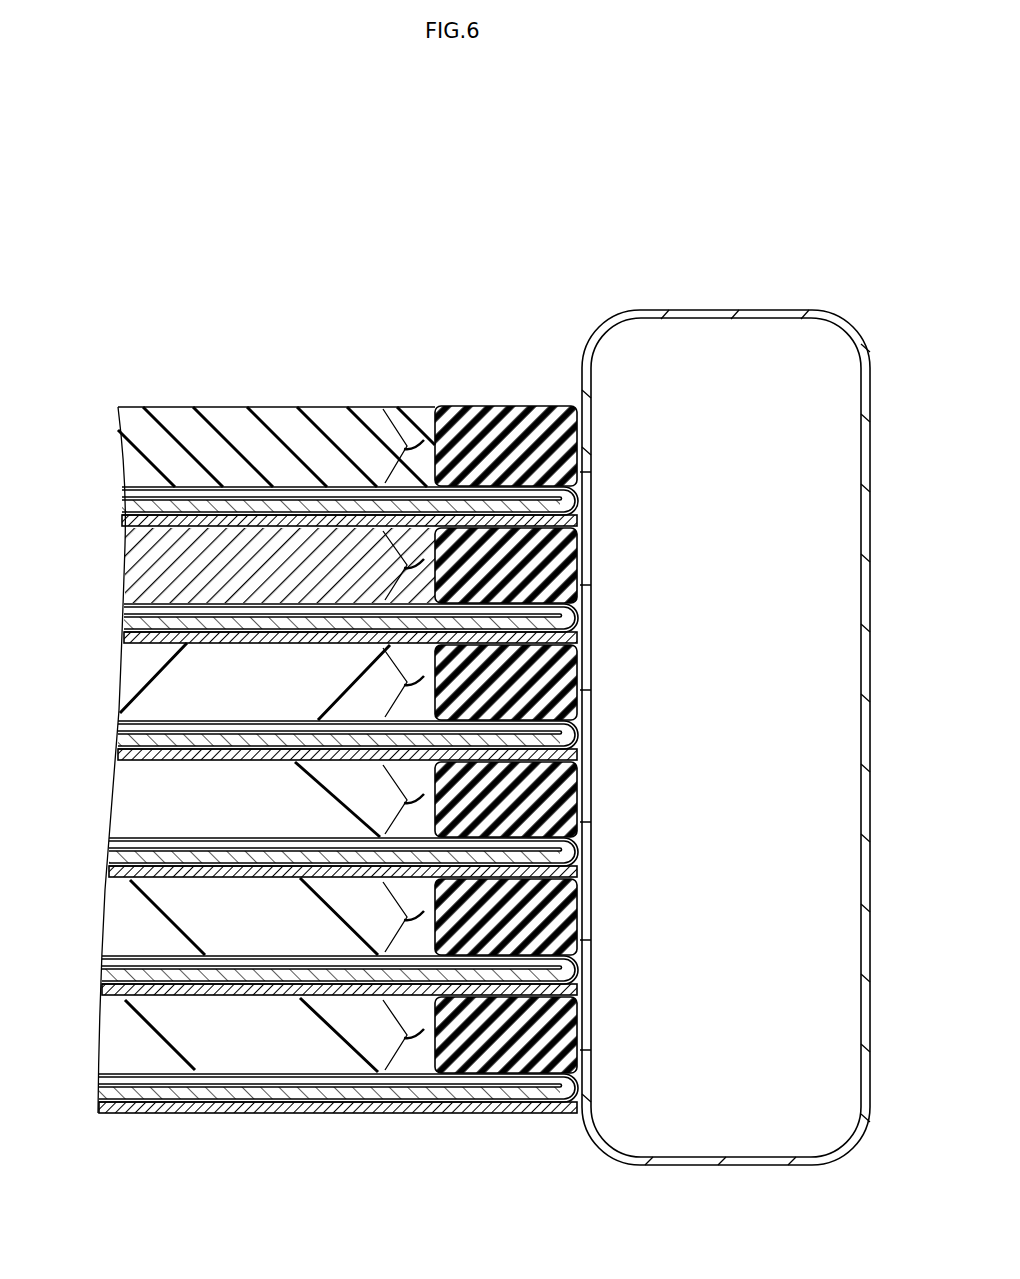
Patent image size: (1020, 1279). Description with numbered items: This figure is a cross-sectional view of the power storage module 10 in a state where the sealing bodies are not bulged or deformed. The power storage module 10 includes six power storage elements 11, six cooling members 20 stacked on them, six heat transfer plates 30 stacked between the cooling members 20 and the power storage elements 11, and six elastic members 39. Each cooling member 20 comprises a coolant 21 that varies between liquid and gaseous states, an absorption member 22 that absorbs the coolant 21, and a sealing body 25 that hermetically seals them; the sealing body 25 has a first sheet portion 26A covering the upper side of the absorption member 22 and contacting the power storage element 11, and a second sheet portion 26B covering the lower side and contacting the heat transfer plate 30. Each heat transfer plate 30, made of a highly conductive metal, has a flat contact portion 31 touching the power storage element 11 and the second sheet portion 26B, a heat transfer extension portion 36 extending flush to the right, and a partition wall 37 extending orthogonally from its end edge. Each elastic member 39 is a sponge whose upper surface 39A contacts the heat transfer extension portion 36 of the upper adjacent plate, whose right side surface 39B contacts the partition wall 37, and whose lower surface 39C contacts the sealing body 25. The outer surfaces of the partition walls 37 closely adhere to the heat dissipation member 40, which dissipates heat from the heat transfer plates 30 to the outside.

The power storage module 10 is at (211, 298).
The power storage element 11 is at (135, 407).
The cooling member 20 is at (110, 500).
The coolant 21 is at (335, 497).
The absorption member 22 is at (301, 742).
The sealing body 25 is at (180, 745).
The first sheet portion 26A is at (126, 486).
The second sheet portion 26B is at (125, 510).
The heat transfer plate 30 is at (132, 525).
The contact portion 31 is at (235, 517).
The heat transfer extension portion 36 is at (464, 1112).
The partition wall 37 is at (587, 472).
The elastic member 39 is at (500, 668).
The upper surface 39A is at (487, 530).
The right side surface 39B is at (590, 420).
The lower surface 39C is at (417, 440).
The heat dissipation member 40 is at (762, 309).